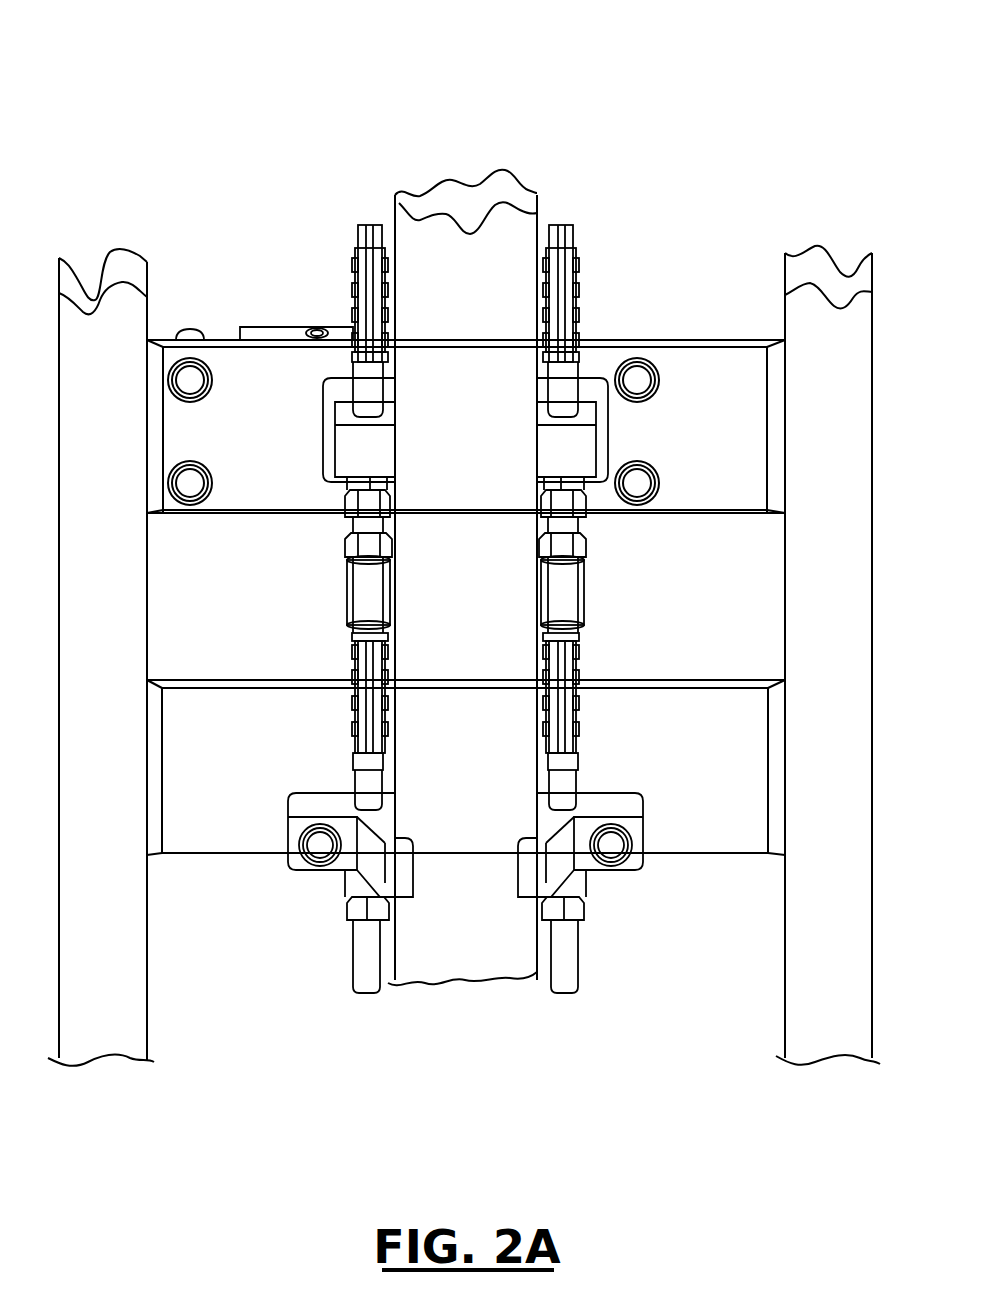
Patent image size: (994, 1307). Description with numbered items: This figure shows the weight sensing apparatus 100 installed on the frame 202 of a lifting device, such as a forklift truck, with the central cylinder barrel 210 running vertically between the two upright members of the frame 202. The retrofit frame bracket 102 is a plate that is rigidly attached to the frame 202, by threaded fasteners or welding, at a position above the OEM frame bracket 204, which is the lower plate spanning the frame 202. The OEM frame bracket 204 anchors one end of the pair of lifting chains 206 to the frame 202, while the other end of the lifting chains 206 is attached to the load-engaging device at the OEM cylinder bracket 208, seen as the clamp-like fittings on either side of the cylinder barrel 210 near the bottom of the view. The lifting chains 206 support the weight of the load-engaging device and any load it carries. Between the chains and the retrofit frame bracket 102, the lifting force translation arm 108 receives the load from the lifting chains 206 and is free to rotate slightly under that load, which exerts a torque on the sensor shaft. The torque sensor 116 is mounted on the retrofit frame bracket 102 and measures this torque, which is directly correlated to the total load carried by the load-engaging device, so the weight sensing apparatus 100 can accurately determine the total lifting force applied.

The weight sensing apparatus 100 is at (695, 121).
The retrofit frame bracket 102 is at (712, 403).
The lifting force translation arm 108 is at (575, 445).
The torque sensor 116 is at (277, 333).
The frame 202 is at (68, 272).
The OEM frame bracket 204 is at (238, 820).
The lifting chains 206 is at (370, 225).
The OEM cylinder bracket 208 is at (560, 858).
The cylinder barrel 210 is at (452, 960).